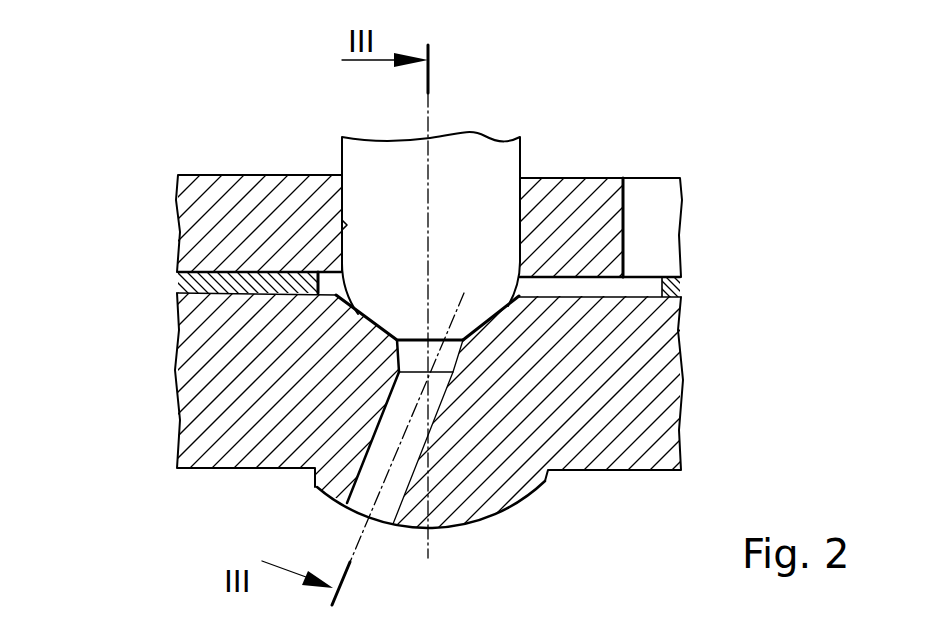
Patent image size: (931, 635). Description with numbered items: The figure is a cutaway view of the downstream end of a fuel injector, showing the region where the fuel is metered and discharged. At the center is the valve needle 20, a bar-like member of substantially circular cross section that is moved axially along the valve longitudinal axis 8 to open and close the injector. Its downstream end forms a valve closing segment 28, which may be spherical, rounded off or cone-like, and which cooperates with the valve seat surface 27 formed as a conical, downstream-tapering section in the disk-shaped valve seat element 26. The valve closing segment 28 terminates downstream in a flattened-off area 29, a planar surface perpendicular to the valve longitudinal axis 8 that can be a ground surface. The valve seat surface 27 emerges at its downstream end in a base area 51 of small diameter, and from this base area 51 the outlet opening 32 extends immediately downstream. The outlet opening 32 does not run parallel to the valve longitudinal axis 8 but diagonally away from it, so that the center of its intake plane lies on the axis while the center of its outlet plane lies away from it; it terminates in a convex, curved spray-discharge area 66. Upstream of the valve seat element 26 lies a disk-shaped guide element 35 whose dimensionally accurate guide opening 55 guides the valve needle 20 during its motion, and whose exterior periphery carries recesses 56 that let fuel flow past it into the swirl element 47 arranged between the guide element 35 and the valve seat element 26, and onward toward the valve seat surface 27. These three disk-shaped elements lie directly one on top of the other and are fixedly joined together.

The valve longitudinal axis 8 is at (428, 173).
The valve needle 20 is at (503, 165).
The valve seat element 26 is at (648, 413).
The valve seat surface 27 is at (501, 318).
The valve closing segment 28 is at (398, 298).
The flattened-off area 29 is at (378, 372).
The outlet opening 32 is at (320, 490).
The guide element 35 is at (592, 233).
The swirl element 47 is at (670, 285).
The base area 51 is at (443, 365).
The guide opening 55 is at (343, 224).
The recesses 56 is at (650, 197).
The spray-discharge area 66 is at (485, 495).